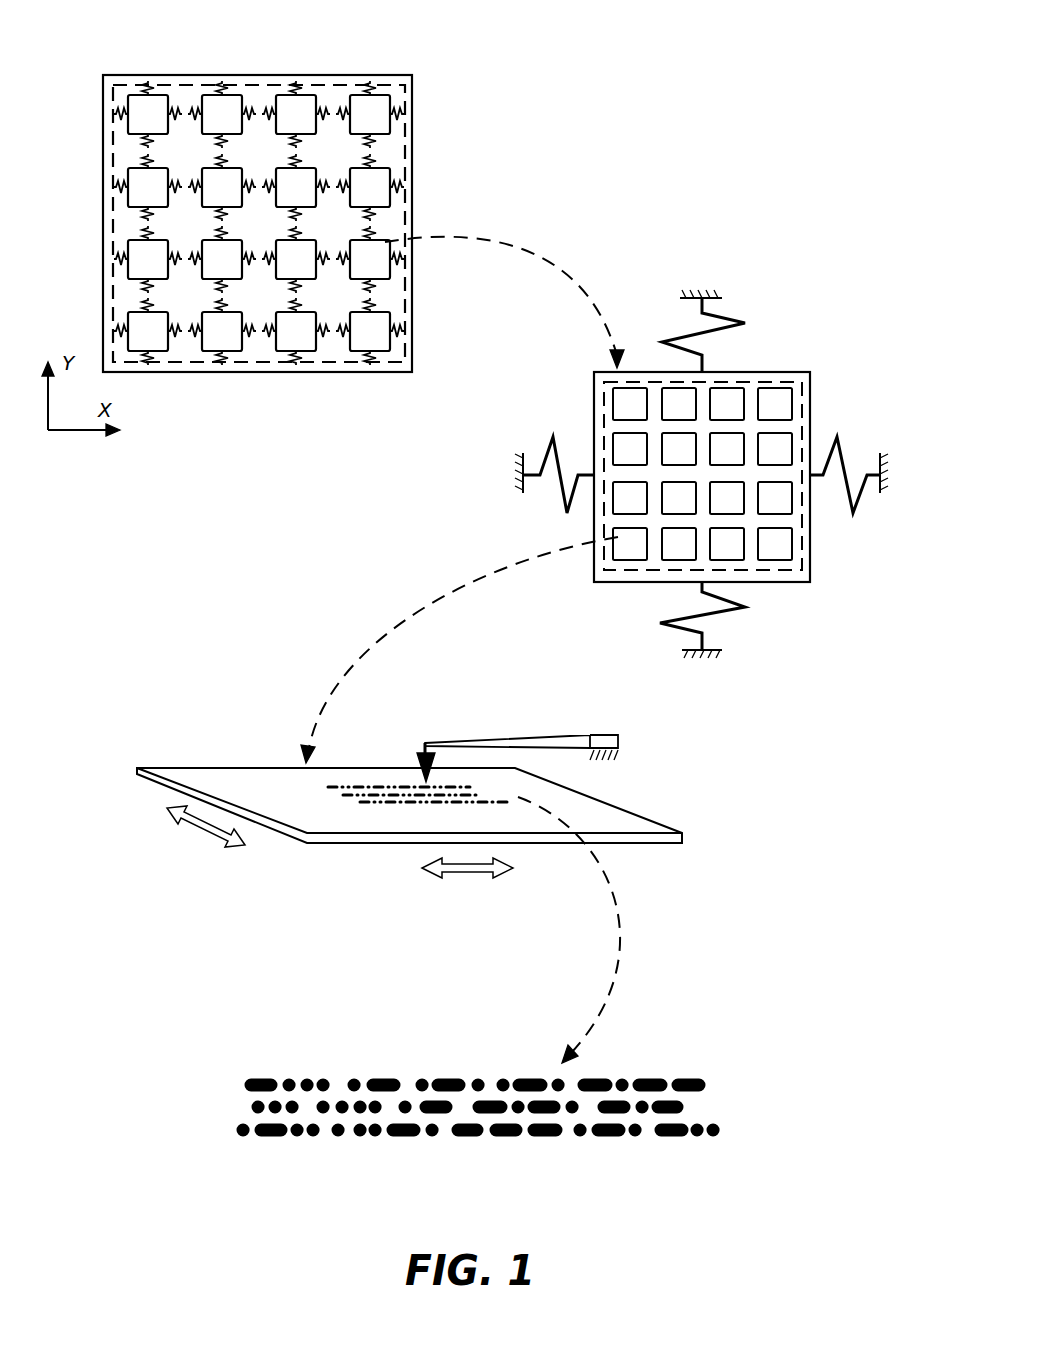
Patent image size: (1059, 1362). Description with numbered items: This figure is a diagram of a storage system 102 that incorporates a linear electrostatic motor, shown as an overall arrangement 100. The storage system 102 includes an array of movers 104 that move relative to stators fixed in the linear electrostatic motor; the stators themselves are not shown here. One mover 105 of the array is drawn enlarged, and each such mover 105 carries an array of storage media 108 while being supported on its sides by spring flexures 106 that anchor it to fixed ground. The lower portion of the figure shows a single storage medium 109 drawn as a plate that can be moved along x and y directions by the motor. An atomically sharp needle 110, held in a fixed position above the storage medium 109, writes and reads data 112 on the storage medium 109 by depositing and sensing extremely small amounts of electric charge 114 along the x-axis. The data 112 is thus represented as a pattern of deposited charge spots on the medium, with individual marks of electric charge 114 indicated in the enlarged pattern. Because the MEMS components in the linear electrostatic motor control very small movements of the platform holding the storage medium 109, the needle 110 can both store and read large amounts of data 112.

The nanolithography system 100 is at (105, 32).
The storage system 102 is at (405, 75).
The array of movers 104 is at (405, 148).
The mover 105 is at (778, 370).
The spring flexures 106 is at (733, 321).
The array of storage media 108 is at (773, 570).
The storage medium 109 is at (647, 820).
The needle 110 is at (450, 742).
The data 112 is at (415, 803).
The electric charge 114 is at (652, 1080).